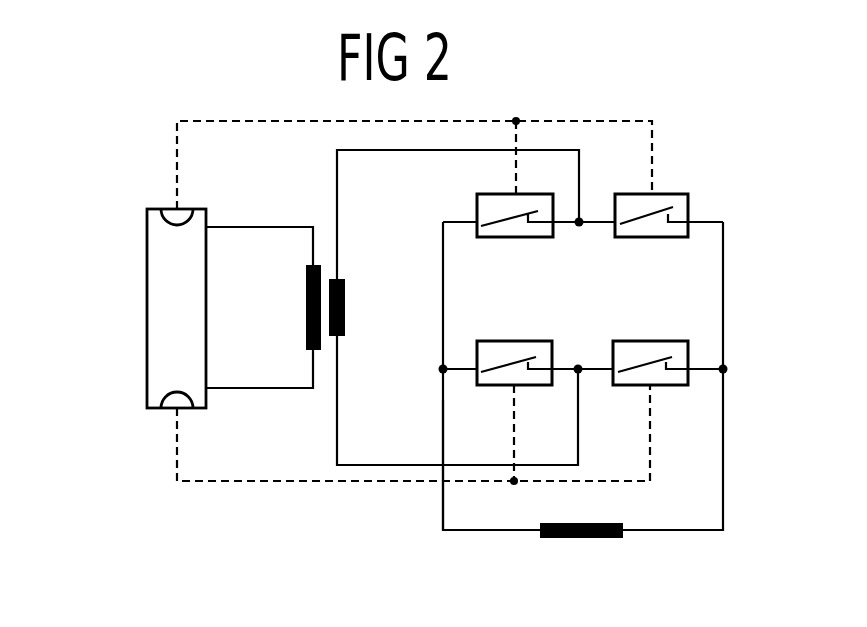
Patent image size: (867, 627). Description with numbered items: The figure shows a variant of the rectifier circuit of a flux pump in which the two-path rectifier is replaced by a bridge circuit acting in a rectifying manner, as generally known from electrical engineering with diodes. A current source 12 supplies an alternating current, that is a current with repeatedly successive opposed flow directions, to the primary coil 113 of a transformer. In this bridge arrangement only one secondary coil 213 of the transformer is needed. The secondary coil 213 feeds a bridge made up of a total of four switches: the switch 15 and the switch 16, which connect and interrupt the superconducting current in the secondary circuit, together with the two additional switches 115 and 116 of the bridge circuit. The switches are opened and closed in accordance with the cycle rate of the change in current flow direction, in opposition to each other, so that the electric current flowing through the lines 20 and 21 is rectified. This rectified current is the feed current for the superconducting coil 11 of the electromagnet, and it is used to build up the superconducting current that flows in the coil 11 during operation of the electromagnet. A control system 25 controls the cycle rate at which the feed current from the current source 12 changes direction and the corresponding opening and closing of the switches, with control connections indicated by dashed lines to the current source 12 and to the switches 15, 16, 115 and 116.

The superconducting coil 11 is at (583, 540).
The current source 12 is at (147, 306).
The switch 15 is at (512, 238).
The switch 16 is at (490, 387).
The line 20 is at (723, 427).
The line 21 is at (443, 508).
The control system 25 is at (170, 209).
The primary coil 113 is at (306, 306).
The additional switch 115 is at (655, 238).
The additional switch 116 is at (670, 387).
The secondary coil 213 is at (345, 307).